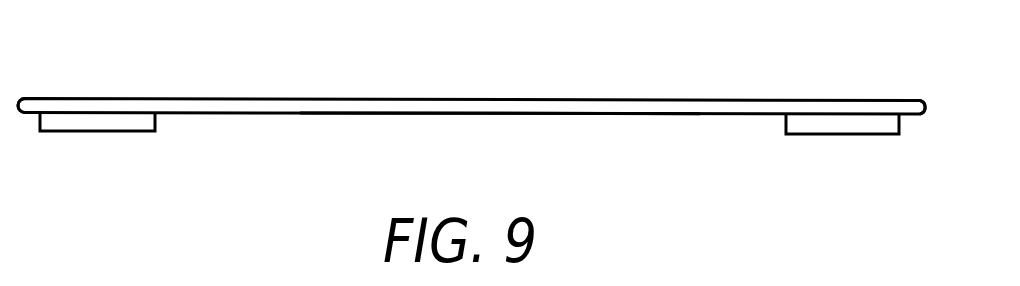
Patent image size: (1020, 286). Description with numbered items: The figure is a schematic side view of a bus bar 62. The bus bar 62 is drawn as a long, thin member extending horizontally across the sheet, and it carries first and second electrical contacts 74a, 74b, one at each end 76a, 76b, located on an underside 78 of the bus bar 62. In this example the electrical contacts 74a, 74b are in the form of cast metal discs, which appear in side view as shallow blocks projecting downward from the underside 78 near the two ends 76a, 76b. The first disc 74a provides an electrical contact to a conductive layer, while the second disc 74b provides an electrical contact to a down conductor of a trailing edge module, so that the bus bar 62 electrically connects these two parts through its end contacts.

The bus bar 62 is at (287, 73).
The first electrical contact 74a is at (100, 122).
The second electrical contact 74b is at (823, 127).
The first end 76a is at (33, 91).
The second end 76b is at (915, 93).
The underside 78 is at (562, 113).